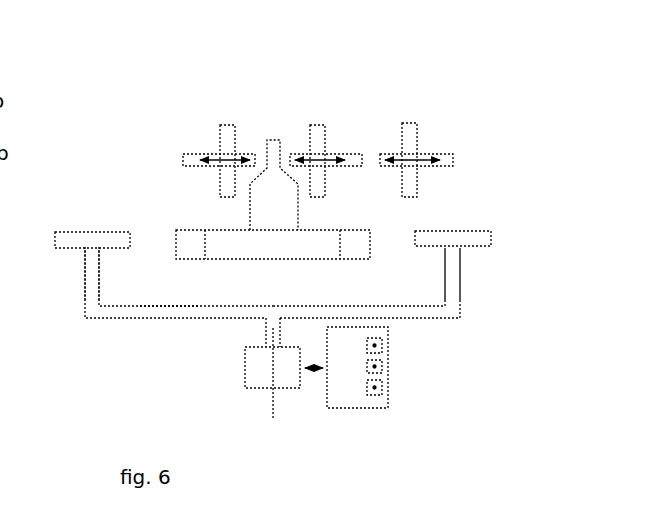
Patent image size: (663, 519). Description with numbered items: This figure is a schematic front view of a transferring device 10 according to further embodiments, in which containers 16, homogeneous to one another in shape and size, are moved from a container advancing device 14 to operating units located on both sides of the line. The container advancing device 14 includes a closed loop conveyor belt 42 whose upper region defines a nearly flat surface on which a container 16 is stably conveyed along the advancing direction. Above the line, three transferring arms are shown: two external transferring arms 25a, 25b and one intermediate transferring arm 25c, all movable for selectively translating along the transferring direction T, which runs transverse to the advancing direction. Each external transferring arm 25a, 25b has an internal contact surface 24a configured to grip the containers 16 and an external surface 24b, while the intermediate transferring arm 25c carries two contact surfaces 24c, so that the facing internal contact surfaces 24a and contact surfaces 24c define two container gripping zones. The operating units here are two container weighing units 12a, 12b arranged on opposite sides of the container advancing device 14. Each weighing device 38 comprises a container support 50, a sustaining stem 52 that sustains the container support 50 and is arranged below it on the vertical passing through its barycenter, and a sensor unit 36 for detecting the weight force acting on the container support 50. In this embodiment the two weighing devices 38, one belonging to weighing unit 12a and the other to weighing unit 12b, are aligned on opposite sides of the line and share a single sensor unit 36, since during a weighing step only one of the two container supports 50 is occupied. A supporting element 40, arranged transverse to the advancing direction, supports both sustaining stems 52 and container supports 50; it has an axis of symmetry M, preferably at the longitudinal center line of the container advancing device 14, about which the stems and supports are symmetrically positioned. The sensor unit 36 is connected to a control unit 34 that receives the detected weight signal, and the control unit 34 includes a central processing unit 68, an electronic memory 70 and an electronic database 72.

The transferring device 10 is at (350, 63).
The container weighing unit 12a is at (90, 332).
The container weighing unit 12b is at (455, 328).
The container advancing device 14 is at (316, 221).
The container 16 is at (263, 218).
The internal contact surface 24a is at (237, 128).
The external surface 24b is at (218, 135).
The contact surface 24c is at (308, 135).
The external transferring arm 25a is at (225, 121).
The external transferring arm 25b is at (409, 119).
The intermediate transferring arm 25c is at (317, 121).
The control unit 34 is at (350, 392).
The sensor unit 36 is at (250, 372).
The weighing device 38 is at (84, 280).
The supporting element 40 is at (173, 310).
The conveyor belt 42 is at (313, 246).
The container support 50 is at (96, 240).
The sustaining stem 52 is at (98, 292).
The central processing unit 68 is at (384, 345).
The electronic memory 70 is at (384, 367).
The electronic database 72 is at (384, 390).
The axis of symmetry M is at (271, 402).
The transferring direction T is at (233, 168).